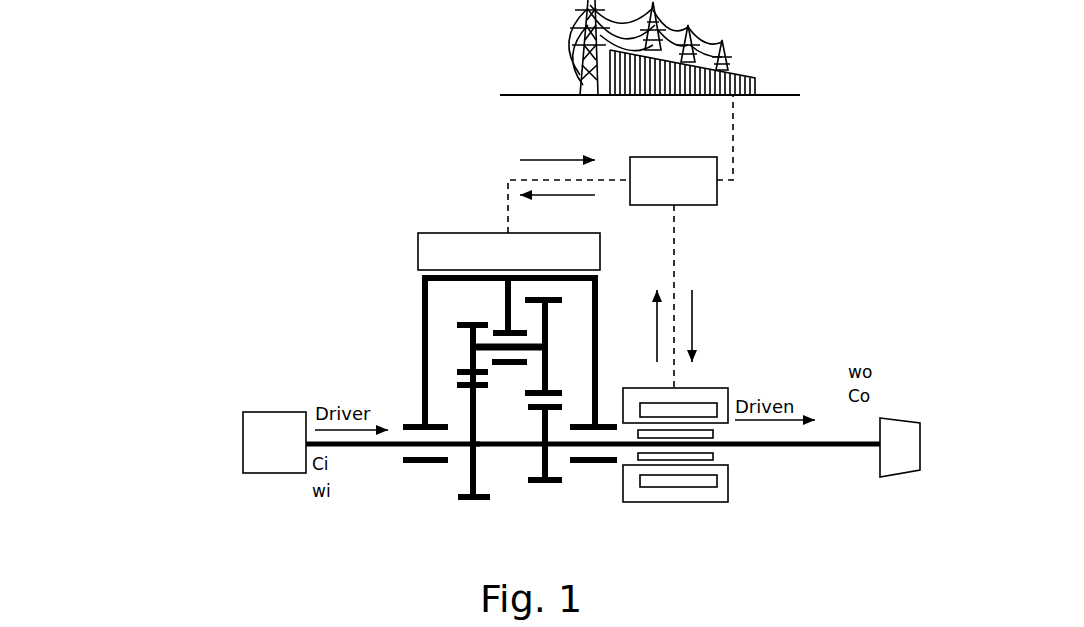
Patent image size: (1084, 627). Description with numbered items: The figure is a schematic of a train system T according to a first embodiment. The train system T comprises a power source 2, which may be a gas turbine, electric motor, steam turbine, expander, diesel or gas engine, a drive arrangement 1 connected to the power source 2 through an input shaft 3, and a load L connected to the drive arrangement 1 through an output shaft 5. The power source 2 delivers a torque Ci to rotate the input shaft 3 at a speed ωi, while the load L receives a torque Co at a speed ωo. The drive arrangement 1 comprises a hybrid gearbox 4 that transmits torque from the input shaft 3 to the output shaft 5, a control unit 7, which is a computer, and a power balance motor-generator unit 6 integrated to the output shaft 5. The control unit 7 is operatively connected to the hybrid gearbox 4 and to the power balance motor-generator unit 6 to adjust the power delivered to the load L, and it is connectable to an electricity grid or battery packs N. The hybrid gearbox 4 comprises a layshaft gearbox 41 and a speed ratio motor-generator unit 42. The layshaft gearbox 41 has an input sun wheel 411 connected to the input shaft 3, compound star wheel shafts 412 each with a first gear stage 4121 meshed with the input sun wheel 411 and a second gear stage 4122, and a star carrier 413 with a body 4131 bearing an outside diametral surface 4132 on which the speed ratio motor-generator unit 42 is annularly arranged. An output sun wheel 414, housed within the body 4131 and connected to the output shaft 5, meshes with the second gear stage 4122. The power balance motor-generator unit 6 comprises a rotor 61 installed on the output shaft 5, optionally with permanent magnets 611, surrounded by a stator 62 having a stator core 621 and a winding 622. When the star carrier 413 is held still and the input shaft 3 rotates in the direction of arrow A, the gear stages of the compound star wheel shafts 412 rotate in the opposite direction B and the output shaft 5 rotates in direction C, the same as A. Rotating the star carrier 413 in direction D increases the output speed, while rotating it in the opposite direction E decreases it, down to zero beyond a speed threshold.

The electricity grid or battery packs N is at (745, 15).
The train system T is at (258, 102).
The drive arrangement 1 is at (775, 240).
The power source 2 is at (274, 442).
The input shaft 3 is at (365, 447).
The hybrid gearbox 4 is at (308, 258).
The layshaft gearbox 41 is at (335, 338).
The input sun wheel 411 is at (477, 483).
The compound star wheel shafts 412 is at (514, 349).
The first gear stage 4121 is at (467, 360).
The second gear stage 4122 is at (547, 325).
The star carrier 413 is at (477, 327).
The body 4131 is at (418, 335).
The outside diametral surface 4132 is at (470, 270).
The output sun wheel 414 is at (545, 470).
The speed ratio motor-generator unit 42 is at (603, 250).
The output shaft 5 is at (822, 445).
The power balance motor-generator unit 6 is at (749, 434).
The rotor 61 is at (761, 495).
The permanent magnets 611 is at (720, 455).
The stator 62 is at (695, 457).
The stator core 621 is at (665, 495).
The winding 622 is at (652, 482).
The control unit 7 is at (708, 188).
The load L is at (895, 432).
The arrow A is at (388, 410).
The arrow B is at (480, 338).
The arrow C is at (838, 410).
The arrow D is at (192, 375).
The direction E is at (130, 378).